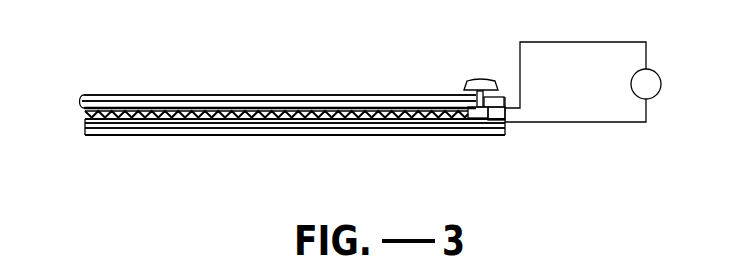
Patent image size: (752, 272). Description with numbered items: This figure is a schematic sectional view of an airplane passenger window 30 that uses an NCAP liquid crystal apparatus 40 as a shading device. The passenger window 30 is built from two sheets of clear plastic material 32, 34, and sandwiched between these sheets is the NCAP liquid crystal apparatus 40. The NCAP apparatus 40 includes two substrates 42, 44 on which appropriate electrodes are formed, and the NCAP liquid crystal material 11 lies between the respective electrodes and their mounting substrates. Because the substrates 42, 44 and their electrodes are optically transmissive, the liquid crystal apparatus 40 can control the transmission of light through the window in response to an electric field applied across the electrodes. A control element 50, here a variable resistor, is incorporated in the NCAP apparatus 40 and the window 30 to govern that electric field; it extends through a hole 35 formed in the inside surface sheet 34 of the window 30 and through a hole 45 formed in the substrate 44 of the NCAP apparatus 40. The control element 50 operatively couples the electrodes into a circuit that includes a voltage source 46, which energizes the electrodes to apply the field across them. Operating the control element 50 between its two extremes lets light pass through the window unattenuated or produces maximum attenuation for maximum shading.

The passenger window 30 is at (96, 87).
The sheet of clear plastic material 34 is at (323, 96).
The substrate 44 is at (170, 108).
The NCAP liquid crystal material 11 is at (215, 121).
The NCAP liquid crystal apparatus 40 is at (80, 121).
The substrate 42 is at (323, 122).
The sheet of clear plastic material 32 is at (420, 136).
The hole 35 is at (475, 100).
The hole 45 is at (484, 119).
The control element 50 is at (487, 71).
The voltage source 46 is at (662, 84).